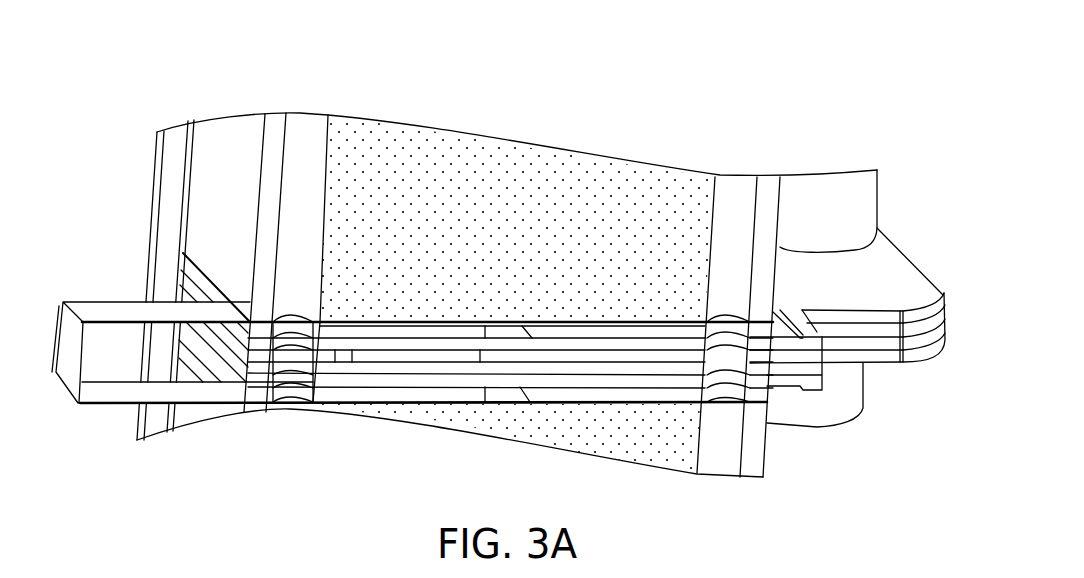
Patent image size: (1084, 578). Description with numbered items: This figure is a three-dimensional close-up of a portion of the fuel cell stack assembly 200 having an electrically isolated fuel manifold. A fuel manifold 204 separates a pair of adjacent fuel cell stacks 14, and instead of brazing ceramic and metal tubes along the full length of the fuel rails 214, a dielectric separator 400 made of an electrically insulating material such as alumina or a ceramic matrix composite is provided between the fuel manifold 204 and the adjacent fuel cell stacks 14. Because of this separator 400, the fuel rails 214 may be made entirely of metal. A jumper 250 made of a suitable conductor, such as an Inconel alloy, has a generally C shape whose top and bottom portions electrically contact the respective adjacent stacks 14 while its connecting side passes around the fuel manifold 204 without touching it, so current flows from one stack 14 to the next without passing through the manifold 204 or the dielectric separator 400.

The fuel cell stack assembly 200 is at (512, 108).
The fuel cell stack 14 is at (500, 255).
The dielectric separator 400 is at (473, 335).
The jumper 250 is at (140, 307).
The fuel manifold 204 is at (830, 268).
The fuel rail 214 is at (858, 185).